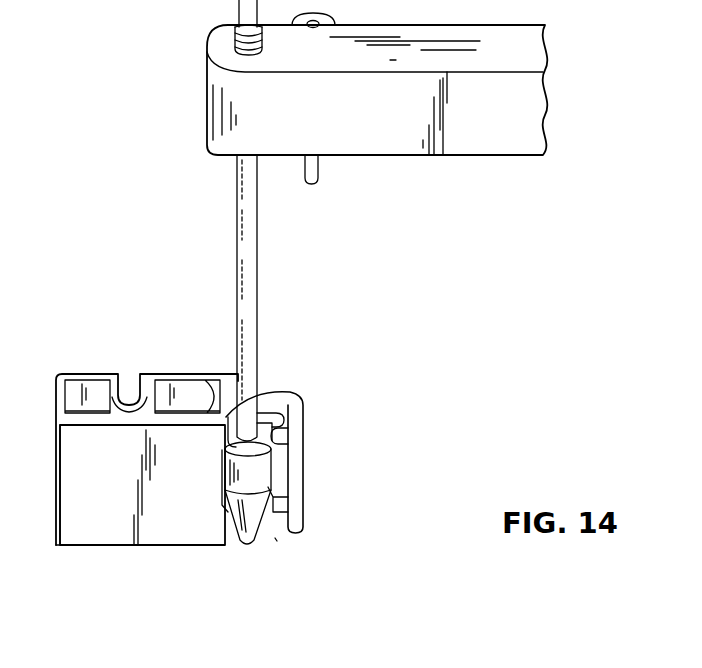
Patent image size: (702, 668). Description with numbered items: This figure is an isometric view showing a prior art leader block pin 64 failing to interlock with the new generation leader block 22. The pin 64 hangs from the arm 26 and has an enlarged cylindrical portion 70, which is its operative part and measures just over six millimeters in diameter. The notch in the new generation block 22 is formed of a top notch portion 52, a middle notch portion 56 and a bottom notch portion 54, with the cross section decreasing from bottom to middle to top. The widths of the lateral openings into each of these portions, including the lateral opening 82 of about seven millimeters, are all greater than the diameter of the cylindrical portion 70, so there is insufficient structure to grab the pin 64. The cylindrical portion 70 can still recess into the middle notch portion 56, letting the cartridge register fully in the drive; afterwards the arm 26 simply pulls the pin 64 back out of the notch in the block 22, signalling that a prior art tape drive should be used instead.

The arm 26 is at (512, 157).
The prior art leader block pin 64 is at (266, 257).
The new generation leader block 22 is at (110, 516).
The top notch portion 52 is at (306, 404).
The middle notch portion 56 is at (281, 436).
The bottom notch portion 54 is at (277, 506).
The cylindrical portion 70 is at (272, 463).
The lateral opening 82 is at (277, 540).